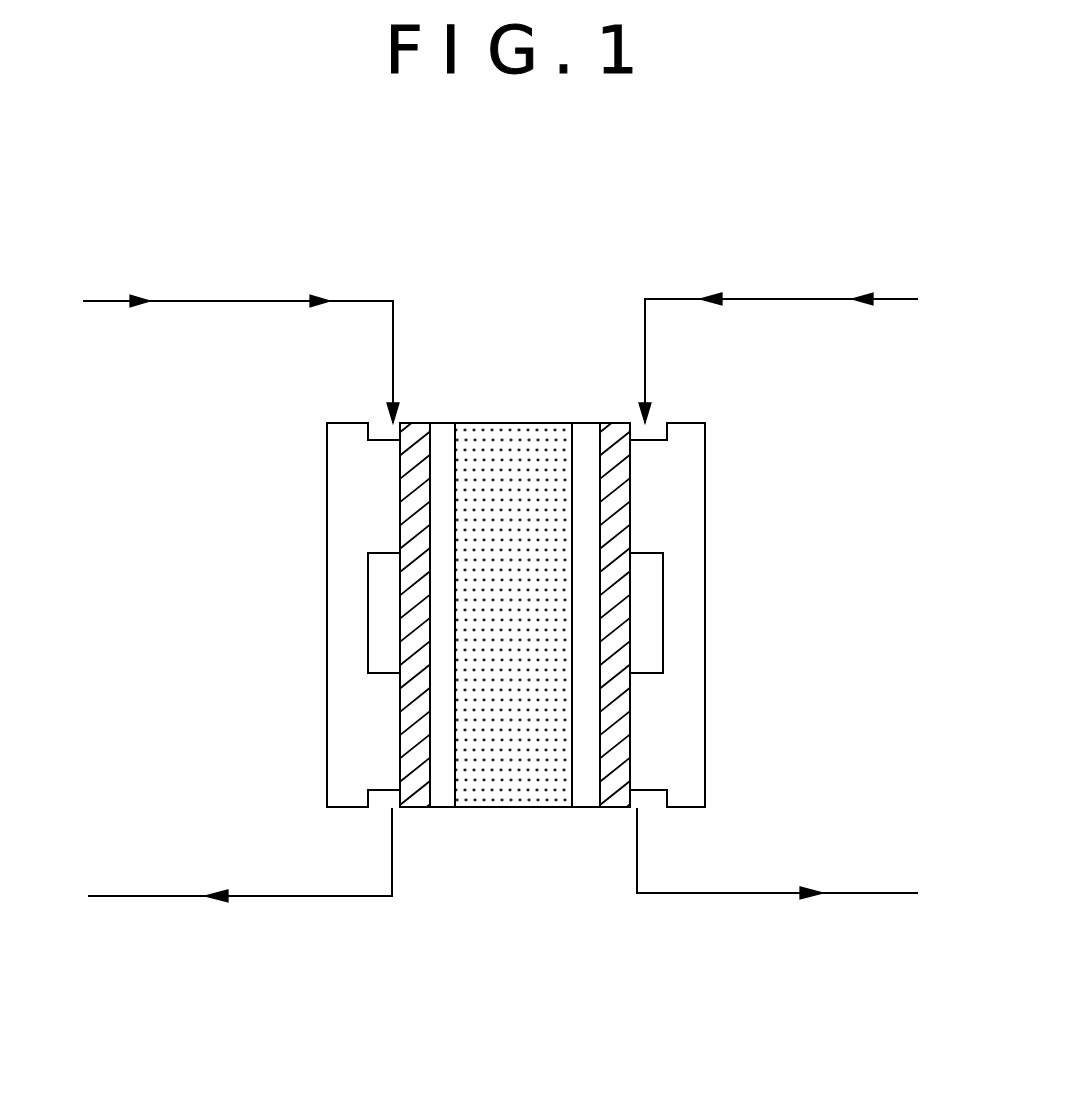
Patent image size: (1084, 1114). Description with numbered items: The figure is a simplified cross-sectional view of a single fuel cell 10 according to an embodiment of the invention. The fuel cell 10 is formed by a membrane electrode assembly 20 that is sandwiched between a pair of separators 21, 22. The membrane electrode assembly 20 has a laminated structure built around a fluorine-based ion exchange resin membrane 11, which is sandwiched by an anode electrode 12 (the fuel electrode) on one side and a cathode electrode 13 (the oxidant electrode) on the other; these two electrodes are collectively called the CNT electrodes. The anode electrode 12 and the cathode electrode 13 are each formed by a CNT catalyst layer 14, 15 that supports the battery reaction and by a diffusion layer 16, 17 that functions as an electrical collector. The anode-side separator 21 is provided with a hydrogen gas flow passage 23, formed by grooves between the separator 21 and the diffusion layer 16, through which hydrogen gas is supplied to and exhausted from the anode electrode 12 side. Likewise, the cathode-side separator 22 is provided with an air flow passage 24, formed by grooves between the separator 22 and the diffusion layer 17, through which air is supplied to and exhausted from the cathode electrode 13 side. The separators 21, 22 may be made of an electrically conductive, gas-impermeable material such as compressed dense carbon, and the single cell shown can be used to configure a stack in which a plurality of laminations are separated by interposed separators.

The fuel cell 10 is at (505, 850).
The fluorine-based ion exchange resin membrane 11 is at (517, 427).
The anode electrode 12 is at (632, 356).
The cathode electrode 13 is at (398, 356).
The CNT catalyst layer 14 is at (583, 423).
The CNT catalyst layer 15 is at (442, 423).
The diffusion layer 16 is at (610, 423).
The diffusion layer 17 is at (420, 423).
The membrane electrode assembly 20 is at (617, 297).
The separator 21 is at (690, 498).
The separator 22 is at (350, 507).
The hydrogen gas flow passage 23 is at (650, 636).
The air flow passage 24 is at (388, 638).